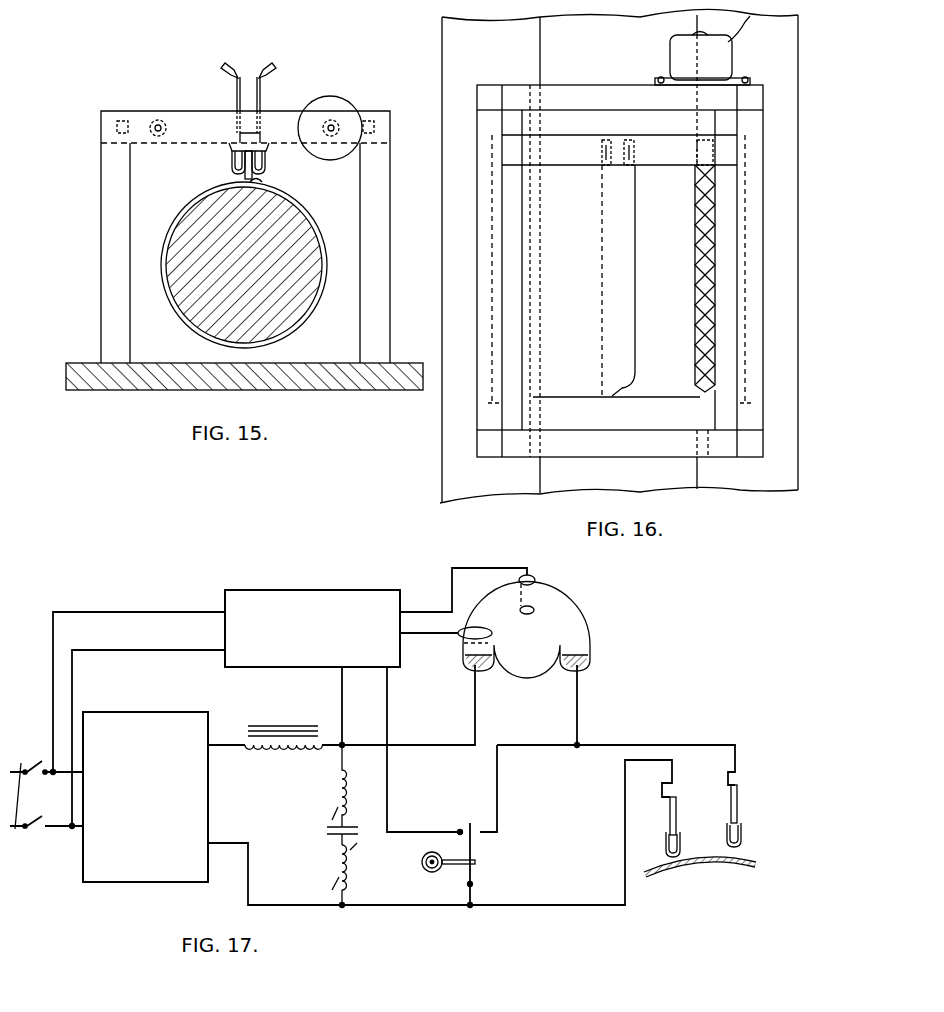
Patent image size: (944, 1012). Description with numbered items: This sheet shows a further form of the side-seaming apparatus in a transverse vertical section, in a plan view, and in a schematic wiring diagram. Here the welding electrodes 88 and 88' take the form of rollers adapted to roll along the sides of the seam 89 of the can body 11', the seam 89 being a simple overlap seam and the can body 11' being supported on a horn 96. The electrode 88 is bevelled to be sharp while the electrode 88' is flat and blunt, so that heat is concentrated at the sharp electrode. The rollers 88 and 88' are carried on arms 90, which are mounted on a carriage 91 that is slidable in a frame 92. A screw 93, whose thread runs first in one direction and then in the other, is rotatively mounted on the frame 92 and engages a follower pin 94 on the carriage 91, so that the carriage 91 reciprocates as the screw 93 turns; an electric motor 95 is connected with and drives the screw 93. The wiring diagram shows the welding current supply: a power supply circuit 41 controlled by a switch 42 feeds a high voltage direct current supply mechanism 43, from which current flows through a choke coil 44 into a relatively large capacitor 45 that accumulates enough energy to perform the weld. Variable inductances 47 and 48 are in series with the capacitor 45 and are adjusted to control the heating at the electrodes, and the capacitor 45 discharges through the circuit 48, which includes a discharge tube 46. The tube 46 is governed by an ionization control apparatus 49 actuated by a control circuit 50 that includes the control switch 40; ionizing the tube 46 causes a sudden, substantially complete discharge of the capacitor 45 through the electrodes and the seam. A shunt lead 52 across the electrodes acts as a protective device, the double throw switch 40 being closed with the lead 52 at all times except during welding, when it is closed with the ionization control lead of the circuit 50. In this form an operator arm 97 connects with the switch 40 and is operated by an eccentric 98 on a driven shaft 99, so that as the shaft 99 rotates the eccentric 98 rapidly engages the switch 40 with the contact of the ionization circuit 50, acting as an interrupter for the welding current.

In FIG. 15, the can body 11' is at (287, 265).
In FIG. 17, the control switch 40 is at (475, 850).
In FIG. 17, the power supply circuit 41 is at (18, 788).
In FIG. 17, the switch 42 is at (39, 761).
In FIG. 17, the high voltage direct current supply mechanism 43 is at (135, 877).
In FIG. 17, the choke coil 44 is at (262, 759).
In FIG. 17, the capacitor 45 is at (328, 834).
In FIG. 17, the discharge tube 46 is at (582, 622).
In FIG. 17, the variable inductance 47 is at (340, 793).
In FIG. 17, the variable inductance / discharge circuit 48 is at (431, 745).
In FIG. 17, the ionization control apparatus 49 is at (309, 594).
In FIG. 17, the control circuit 50 is at (389, 803).
In FIG. 17, the shunt lead 52 is at (546, 737).
In FIG. 15, the welding electrode 88 is at (224, 162).
In FIG. 17, the welding electrode 88 is at (700, 864).
In FIG. 15, the welding electrode 88' is at (272, 166).
In FIG. 17, the welding electrode 88' is at (736, 856).
In FIG. 15, the seam 89 is at (272, 192).
In FIG. 16, the seam 89 is at (612, 397).
In FIG. 15, the arms 90 is at (238, 104).
In FIG. 16, the arms 90 is at (606, 140).
In FIG. 17, the arms 90 is at (670, 815).
In FIG. 15, the carriage 91 is at (357, 118).
In FIG. 16, the carriage 91 is at (566, 158).
In FIG. 15, the frame 92 is at (101, 290).
In FIG. 16, the frame 92 is at (482, 452).
In FIG. 15, the screw 93 is at (333, 134).
In FIG. 16, the screw 93 is at (712, 288).
In FIG. 16, the follower pin 94 is at (708, 152).
In FIG. 15, the electric motor 95 is at (335, 101).
In FIG. 16, the electric motor 95 is at (733, 66).
In FIG. 15, the horn 96 is at (289, 319).
In FIG. 16, the horn 96 is at (572, 420).
In FIG. 17, the operator arm 97 is at (454, 866).
In FIG. 17, the eccentric 98 is at (428, 869).
In FIG. 17, the driven shaft 99 is at (421, 861).